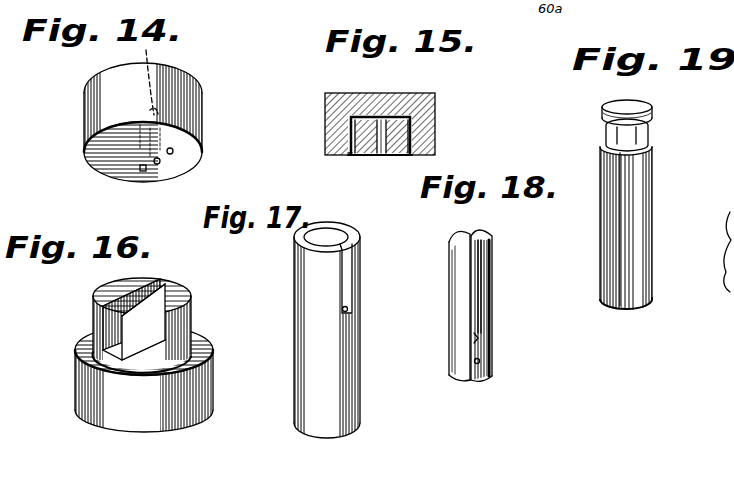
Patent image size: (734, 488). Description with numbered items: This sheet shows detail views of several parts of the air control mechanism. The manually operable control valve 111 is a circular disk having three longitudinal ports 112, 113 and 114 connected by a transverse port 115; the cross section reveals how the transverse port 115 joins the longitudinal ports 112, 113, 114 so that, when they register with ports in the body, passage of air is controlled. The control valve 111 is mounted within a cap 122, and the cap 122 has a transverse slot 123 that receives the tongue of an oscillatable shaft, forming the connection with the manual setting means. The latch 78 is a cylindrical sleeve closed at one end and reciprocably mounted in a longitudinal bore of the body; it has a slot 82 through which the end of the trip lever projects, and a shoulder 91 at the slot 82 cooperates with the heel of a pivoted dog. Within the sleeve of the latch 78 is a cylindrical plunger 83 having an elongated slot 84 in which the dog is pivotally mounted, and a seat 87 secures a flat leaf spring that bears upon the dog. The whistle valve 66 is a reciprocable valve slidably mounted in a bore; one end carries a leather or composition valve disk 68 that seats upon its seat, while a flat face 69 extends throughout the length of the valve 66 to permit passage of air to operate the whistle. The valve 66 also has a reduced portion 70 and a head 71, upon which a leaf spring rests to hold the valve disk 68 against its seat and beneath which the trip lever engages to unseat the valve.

In FIG. 14, the manually operable control valve 111 is at (165, 80).
In FIG. 15, the manually operable control valve 111 is at (338, 98).
In FIG. 14, the longitudinal port 112 is at (174, 151).
In FIG. 15, the longitudinal port 112 is at (412, 133).
In FIG. 14, the longitudinal port 113 is at (160, 163).
In FIG. 15, the longitudinal port 113 is at (381, 153).
In FIG. 14, the longitudinal port 114 is at (143, 172).
In FIG. 15, the longitudinal port 114 is at (348, 155).
In FIG. 14, the transverse port 115 is at (143, 96).
In FIG. 15, the transverse port 115 is at (404, 118).
In FIG. 16, the cap 122 is at (212, 360).
In FIG. 16, the transverse slot 123 is at (160, 284).
In FIG. 17, the latch 78 is at (343, 345).
In FIG. 17, the slot 82 is at (348, 262).
In FIG. 17, the shoulder 91 is at (352, 313).
In FIG. 18, the cylindrical plunger 83 is at (491, 318).
In FIG. 18, the elongated slot 84 is at (478, 282).
In FIG. 18, the seat 87 is at (481, 366).
In FIG. 19, the whistle valve 66 is at (593, 192).
In FIG. 19, the valve disk 68 is at (640, 306).
In FIG. 19, the flat face 69 is at (637, 232).
In FIG. 19, the reduced portion 70 is at (649, 135).
In FIG. 19, the head 71 is at (636, 110).